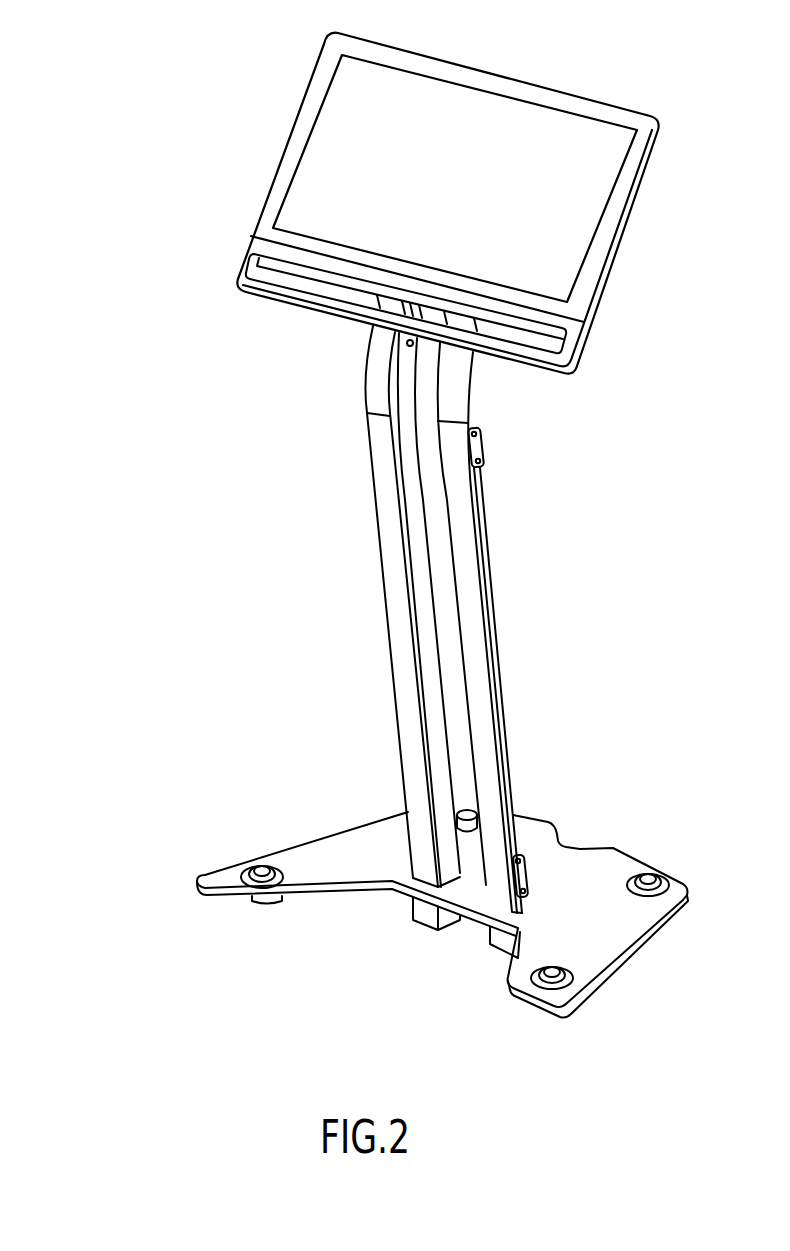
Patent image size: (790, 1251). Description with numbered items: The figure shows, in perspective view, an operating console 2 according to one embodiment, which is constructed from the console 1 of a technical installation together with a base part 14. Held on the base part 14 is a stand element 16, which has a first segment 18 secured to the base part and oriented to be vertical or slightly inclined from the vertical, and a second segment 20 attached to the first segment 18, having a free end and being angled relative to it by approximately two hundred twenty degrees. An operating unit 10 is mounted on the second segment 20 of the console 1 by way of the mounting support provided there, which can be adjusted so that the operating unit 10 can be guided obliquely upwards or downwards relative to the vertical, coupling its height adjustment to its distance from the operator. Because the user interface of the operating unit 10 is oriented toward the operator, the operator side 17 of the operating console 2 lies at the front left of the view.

The console 1 is at (232, 415).
The operating console 2 is at (176, 74).
The operating unit 10 is at (625, 88).
The base part 14 is at (293, 858).
The stand element 16 is at (570, 610).
The operator side 17 is at (162, 291).
The first segment 18 is at (488, 728).
The second segment 20 is at (506, 388).